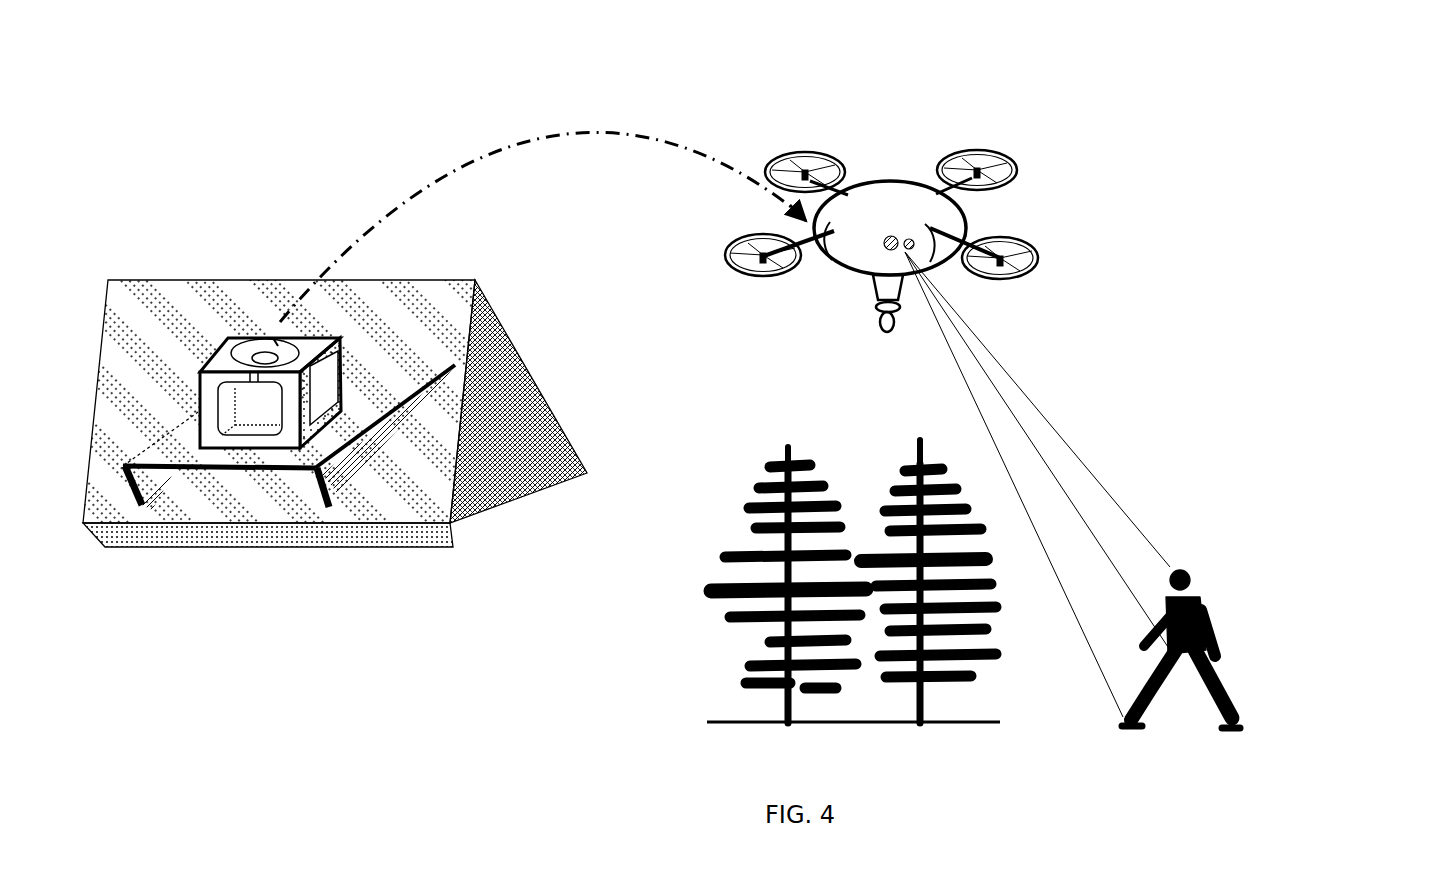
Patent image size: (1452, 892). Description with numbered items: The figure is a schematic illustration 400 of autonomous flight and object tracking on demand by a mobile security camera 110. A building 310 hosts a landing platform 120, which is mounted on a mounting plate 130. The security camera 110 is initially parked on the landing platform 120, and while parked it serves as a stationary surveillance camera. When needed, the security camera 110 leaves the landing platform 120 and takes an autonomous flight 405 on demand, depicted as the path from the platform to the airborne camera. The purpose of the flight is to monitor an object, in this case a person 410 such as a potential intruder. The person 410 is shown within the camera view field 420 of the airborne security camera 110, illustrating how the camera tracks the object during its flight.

The mobile security camera 110 is at (890, 181).
The landing platform 120 is at (263, 332).
The mounting plate 130 is at (278, 467).
The building 310 is at (428, 280).
The schematic illustration 400 is at (1437, 108).
The autonomous flight 405 is at (667, 142).
The object (person) 410 is at (1190, 566).
The camera view field 420 is at (1092, 476).